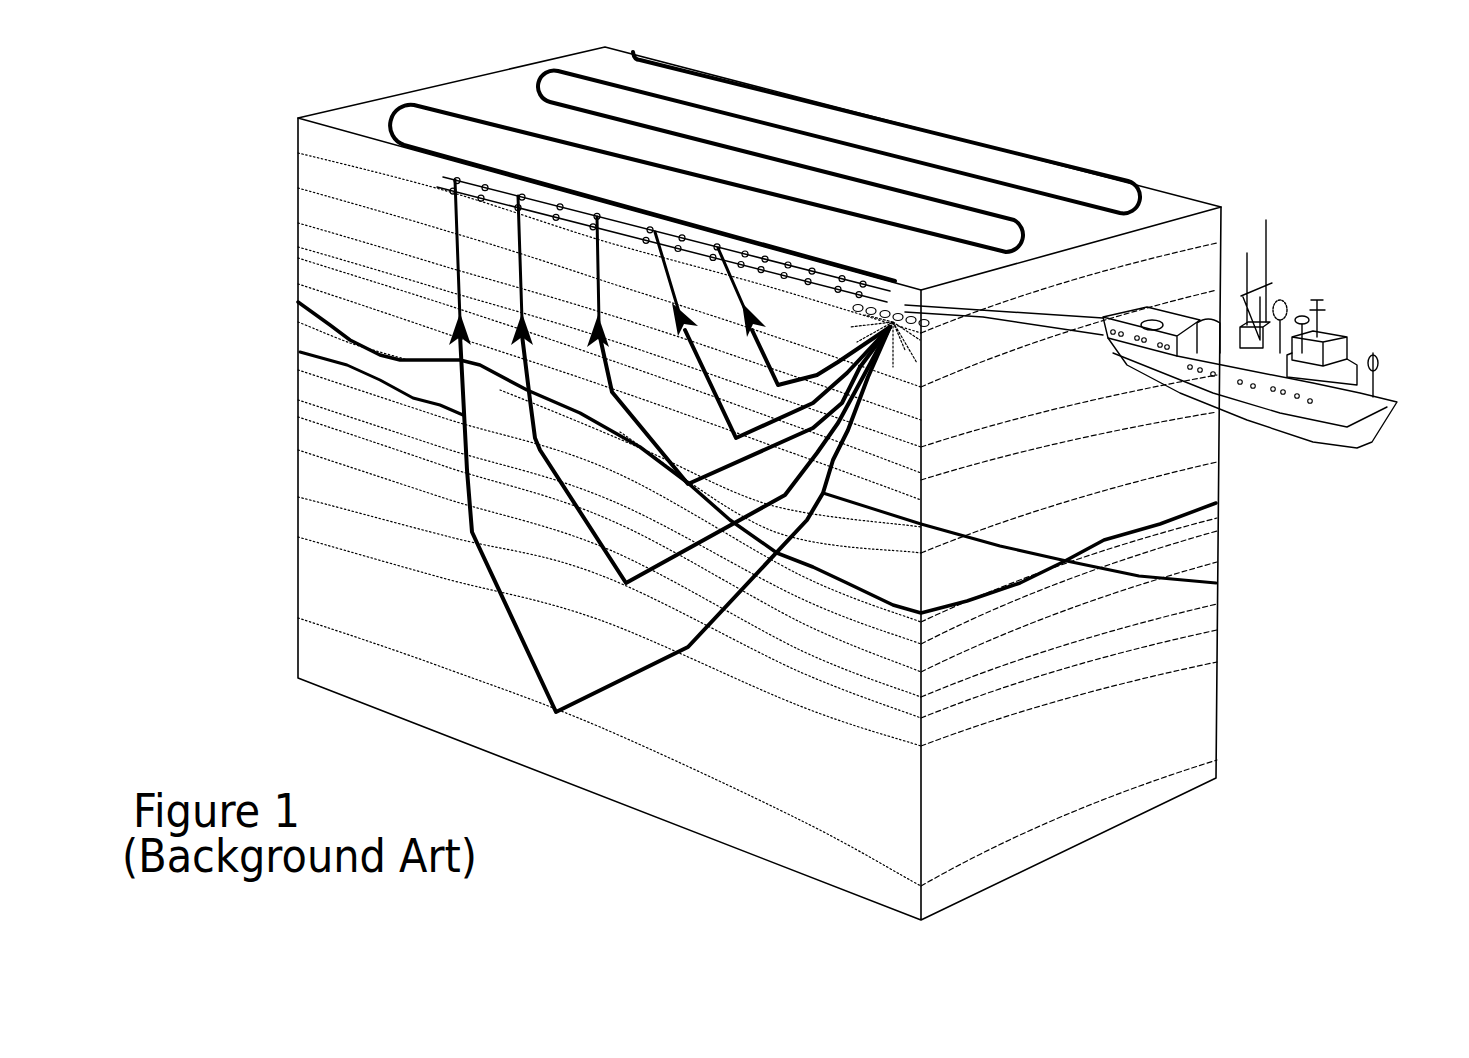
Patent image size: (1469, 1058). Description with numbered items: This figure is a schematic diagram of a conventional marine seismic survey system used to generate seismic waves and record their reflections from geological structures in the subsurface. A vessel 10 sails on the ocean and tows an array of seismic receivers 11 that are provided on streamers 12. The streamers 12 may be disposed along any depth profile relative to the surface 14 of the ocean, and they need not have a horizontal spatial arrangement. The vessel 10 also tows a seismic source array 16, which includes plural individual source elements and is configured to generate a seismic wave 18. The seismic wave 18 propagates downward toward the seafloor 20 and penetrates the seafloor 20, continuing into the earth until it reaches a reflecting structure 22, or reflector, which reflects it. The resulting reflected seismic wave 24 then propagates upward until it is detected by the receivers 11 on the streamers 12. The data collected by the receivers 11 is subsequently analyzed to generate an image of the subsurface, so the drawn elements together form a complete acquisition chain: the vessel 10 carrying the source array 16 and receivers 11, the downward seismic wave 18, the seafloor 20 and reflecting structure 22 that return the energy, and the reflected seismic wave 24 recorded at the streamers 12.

The vessel 10 is at (1352, 323).
The seismic receivers 11 is at (517, 187).
The streamers 12 is at (672, 215).
The surface of the ocean 14 is at (495, 92).
The seismic source array 16 is at (900, 305).
The seismic wave 18 is at (1216, 583).
The seafloor 20 is at (1172, 503).
The reflecting structure 22 is at (410, 500).
The reflected seismic wave 24 is at (300, 352).